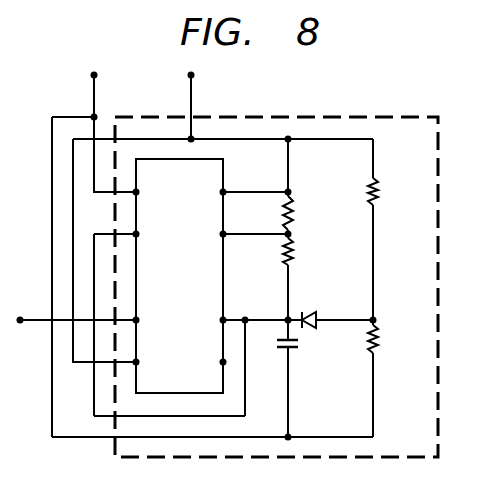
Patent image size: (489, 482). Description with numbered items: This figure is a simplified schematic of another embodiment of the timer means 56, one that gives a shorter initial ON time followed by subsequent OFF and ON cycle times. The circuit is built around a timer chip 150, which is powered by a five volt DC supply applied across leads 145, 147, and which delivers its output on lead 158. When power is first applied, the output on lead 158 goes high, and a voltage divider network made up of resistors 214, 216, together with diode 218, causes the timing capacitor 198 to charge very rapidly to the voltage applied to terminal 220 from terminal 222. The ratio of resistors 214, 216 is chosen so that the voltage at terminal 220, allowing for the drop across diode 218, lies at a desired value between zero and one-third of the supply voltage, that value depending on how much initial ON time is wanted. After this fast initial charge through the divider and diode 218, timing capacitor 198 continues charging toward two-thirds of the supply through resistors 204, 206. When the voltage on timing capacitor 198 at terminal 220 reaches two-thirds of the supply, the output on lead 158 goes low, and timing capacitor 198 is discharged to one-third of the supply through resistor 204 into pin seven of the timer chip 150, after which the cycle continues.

The timer means 56 is at (345, 117).
The 555 timer chip 150 is at (223, 168).
The lead 147 is at (95, 105).
The lead 145 is at (192, 105).
The lead 158 is at (42, 322).
The resistor 206 is at (288, 213).
The resistor 204 is at (288, 256).
The resistor 214 is at (373, 190).
The resistor 216 is at (373, 345).
The diode 218 is at (310, 312).
The timing capacitor 198 is at (280, 350).
The terminal 220 is at (285, 318).
The terminal 222 is at (373, 318).